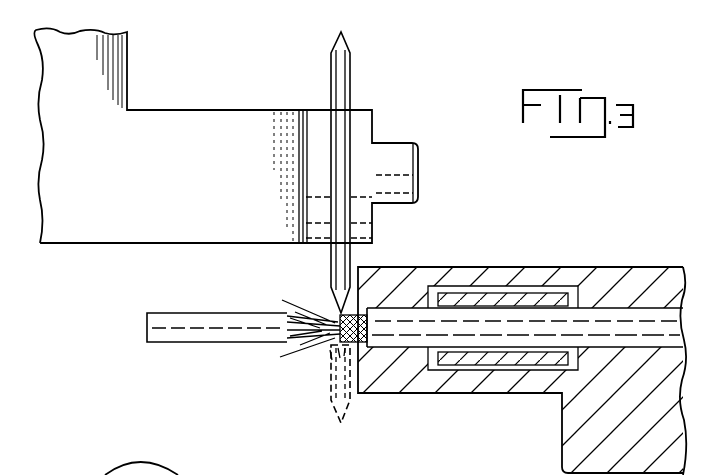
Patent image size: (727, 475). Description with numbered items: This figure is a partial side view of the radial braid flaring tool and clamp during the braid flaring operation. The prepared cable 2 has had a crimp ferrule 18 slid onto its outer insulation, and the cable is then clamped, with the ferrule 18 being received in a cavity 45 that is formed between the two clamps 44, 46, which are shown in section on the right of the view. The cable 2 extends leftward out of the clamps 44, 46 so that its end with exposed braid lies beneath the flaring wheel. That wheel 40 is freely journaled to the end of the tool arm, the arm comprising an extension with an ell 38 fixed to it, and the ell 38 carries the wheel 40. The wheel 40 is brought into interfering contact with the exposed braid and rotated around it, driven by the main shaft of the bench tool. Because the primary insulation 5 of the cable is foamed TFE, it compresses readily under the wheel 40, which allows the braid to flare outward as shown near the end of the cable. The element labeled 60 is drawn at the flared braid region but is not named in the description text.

The cable 2 is at (627, 308).
The primary insulation 5 is at (226, 344).
The crimp ferrule 18 is at (474, 297).
The ell 38 is at (236, 117).
The wheel 40 is at (350, 72).
The clamp 44 is at (453, 396).
The cavity 45 is at (527, 371).
The clamp 46 is at (544, 266).
The wire strand joint 60 is at (290, 300).